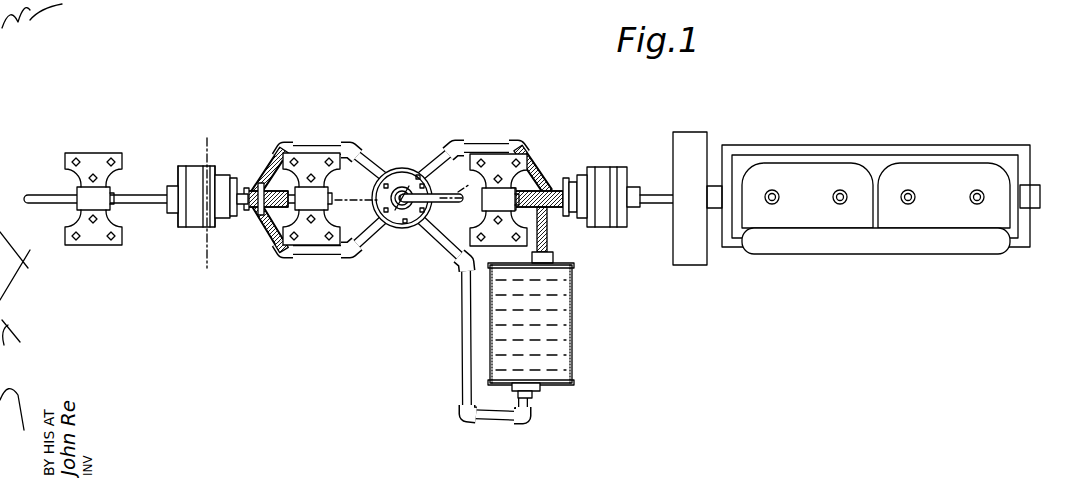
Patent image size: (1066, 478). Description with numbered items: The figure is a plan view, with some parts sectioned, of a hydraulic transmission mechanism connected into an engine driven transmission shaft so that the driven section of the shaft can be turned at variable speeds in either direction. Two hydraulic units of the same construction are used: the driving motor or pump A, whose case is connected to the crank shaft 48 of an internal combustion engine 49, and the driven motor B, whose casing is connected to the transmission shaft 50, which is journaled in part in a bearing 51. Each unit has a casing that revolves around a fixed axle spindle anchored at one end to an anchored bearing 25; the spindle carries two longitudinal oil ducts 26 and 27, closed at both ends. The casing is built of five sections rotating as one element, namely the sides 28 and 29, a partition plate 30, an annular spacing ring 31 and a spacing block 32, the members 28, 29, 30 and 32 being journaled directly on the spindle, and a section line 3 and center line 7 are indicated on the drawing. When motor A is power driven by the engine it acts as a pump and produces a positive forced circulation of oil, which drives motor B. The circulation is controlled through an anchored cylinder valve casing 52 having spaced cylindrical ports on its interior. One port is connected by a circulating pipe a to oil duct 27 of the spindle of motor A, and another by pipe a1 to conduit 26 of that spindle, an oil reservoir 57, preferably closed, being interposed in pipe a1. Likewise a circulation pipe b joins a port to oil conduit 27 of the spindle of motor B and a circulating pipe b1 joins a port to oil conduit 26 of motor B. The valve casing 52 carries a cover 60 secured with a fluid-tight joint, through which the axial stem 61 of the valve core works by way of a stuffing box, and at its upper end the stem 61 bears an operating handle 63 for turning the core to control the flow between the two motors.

The section line 3 is at (207, 202).
The center line 7 is at (402, 185).
The anchored bearing 25 is at (311, 190).
The longitudinal oil duct 26 is at (255, 188).
The longitudinal oil duct 27 is at (252, 205).
The side 28 is at (220, 180).
The side 29 is at (176, 216).
The partition plate 30 is at (200, 208).
The annular spacing ring 31 is at (209, 172).
The spacing block 32 is at (192, 228).
The crank shaft 48 is at (662, 204).
The internal combustion engine 49 is at (815, 172).
The transmission shaft 50 is at (138, 202).
The bearing 51 is at (86, 205).
The cylinder valve casing 52 is at (415, 230).
The oil reservoir 57 is at (558, 350).
The cover 60 is at (390, 236).
The axial stem 61 is at (404, 190).
The operating handle 63 is at (417, 224).
The driving motor or pump A is at (606, 262).
The driven motor B is at (200, 190).
The circulating pipe a is at (430, 165).
The circulating pipe a1 is at (441, 242).
The circulation pipe b is at (373, 246).
The circulating pipe b1 is at (378, 170).